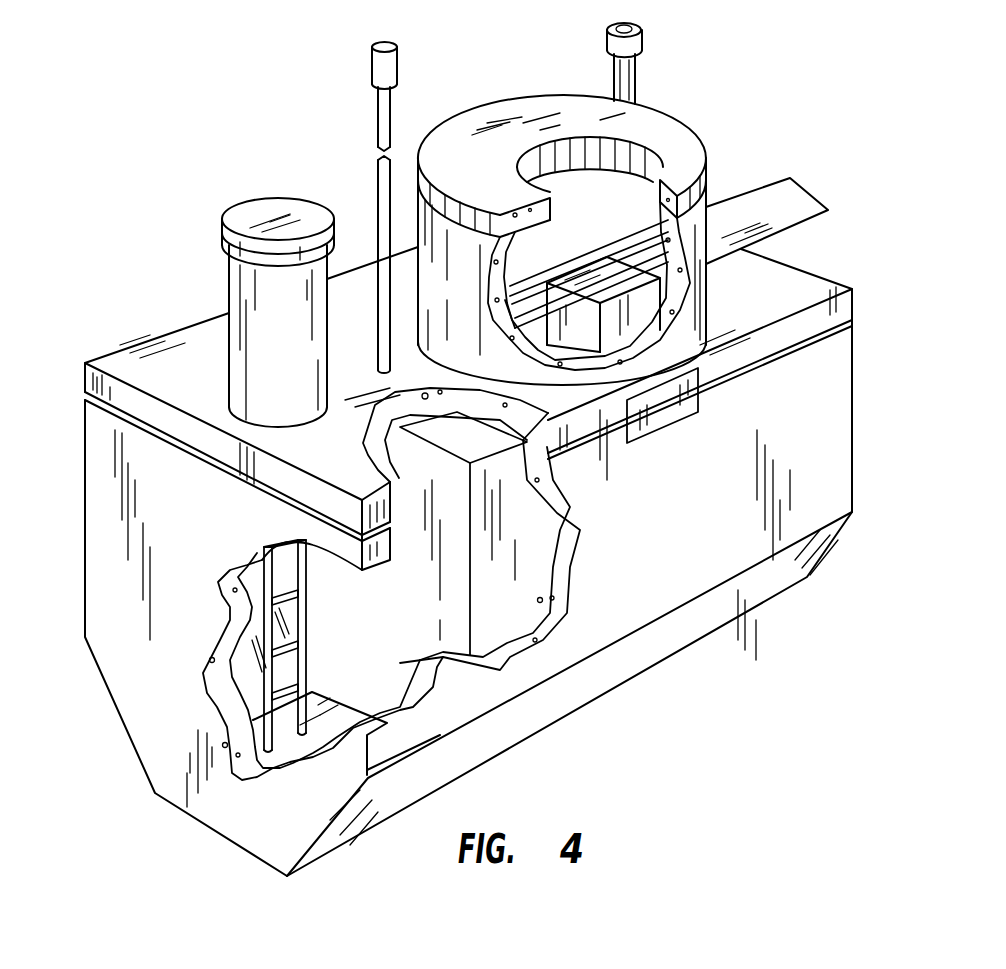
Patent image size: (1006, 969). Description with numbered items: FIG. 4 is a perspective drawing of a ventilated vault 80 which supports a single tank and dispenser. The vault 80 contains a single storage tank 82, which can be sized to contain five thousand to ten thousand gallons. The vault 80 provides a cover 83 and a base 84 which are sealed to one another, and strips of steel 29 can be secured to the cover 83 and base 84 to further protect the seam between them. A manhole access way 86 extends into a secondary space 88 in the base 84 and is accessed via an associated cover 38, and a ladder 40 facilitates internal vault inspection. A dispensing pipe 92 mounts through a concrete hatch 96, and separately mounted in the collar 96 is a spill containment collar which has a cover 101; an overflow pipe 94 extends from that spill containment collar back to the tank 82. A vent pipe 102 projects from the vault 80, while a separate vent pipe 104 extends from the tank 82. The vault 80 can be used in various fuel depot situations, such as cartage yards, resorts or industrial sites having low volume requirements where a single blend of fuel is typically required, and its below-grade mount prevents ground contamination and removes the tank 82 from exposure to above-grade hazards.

The strips of steel 29 is at (673, 427).
The cover 38 is at (255, 198).
The ladder 40 is at (309, 618).
The vault 80 is at (893, 234).
The storage tank 82 is at (497, 643).
The cover 83 is at (853, 298).
The base 84 is at (855, 406).
The manhole access way 86 is at (229, 292).
The secondary space 88 is at (433, 640).
The dispensing pipe 92 is at (648, 238).
The overflow pipe 94 is at (651, 262).
The concrete hatch 96 is at (657, 110).
The cover 101 is at (650, 291).
The vent pipe 102 is at (640, 52).
The vent pipe 104 is at (378, 100).